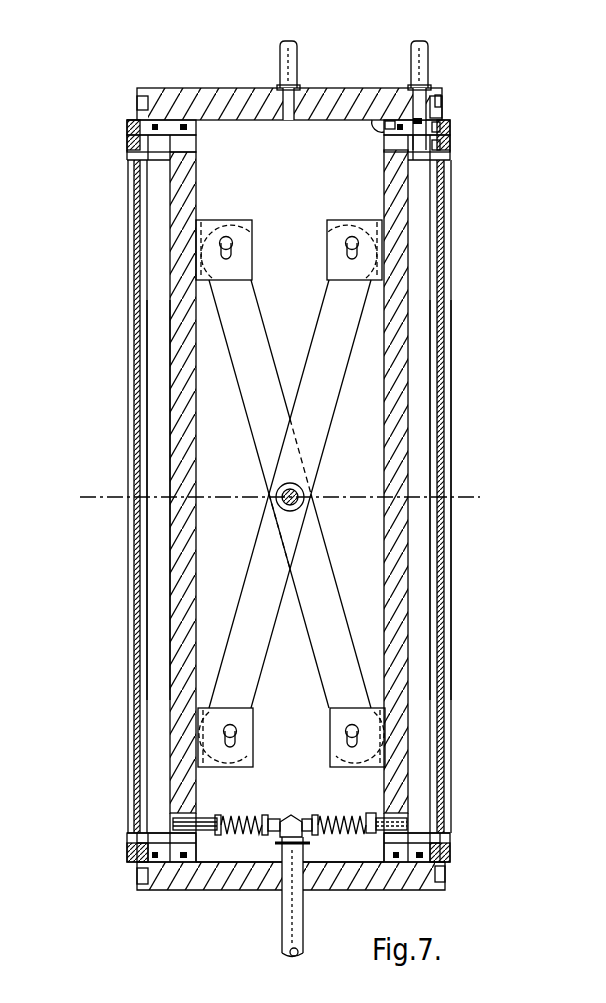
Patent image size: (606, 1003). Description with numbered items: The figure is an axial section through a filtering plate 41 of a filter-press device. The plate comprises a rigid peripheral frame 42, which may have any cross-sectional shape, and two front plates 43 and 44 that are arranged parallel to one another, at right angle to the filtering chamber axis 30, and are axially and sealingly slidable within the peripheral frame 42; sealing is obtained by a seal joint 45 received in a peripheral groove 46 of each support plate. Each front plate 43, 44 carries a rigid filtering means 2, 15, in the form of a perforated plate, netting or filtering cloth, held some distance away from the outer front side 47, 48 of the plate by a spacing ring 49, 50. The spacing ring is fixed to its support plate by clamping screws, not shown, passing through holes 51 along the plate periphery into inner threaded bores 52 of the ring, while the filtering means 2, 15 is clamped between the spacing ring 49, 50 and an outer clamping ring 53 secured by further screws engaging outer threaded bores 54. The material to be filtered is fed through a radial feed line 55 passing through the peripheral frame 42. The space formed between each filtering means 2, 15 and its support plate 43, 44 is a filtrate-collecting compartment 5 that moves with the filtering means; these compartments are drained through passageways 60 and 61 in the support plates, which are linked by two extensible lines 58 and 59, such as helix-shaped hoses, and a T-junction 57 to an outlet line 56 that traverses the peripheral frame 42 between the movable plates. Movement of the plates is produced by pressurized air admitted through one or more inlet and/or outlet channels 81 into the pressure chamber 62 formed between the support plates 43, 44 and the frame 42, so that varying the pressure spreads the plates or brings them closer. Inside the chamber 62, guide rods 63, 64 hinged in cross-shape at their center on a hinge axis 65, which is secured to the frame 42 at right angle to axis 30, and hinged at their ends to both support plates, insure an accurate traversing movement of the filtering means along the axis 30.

The filtering means 2 is at (455, 189).
The filtrate-collecting compartment 5 is at (167, 300).
The filtering means 15 is at (135, 258).
The filtering chamber axis 30 is at (100, 490).
The filtering plate 41 is at (344, 70).
The peripheral frame 42 is at (215, 92).
The front plate 43 is at (385, 196).
The front plate 44 is at (198, 172).
The seal joint 45 is at (393, 110).
The peripheral groove 46 is at (388, 138).
The outer front side 47 is at (447, 556).
The outer front side 48 is at (175, 556).
The spacing ring 49 is at (442, 120).
The spacing ring 50 is at (150, 126).
The holes 51 is at (385, 140).
The inner threaded bores 52 is at (410, 150).
The outer clamping ring 53 is at (452, 128).
The outer threaded bores 54 is at (452, 151).
The radial feed line 55 is at (428, 62).
The outlet line 56 is at (282, 924).
The T-junction 57 is at (290, 815).
The extensible line 58 is at (325, 815).
The extensible line 59 is at (240, 815).
The passageway 60 is at (384, 818).
The passageway 61 is at (226, 790).
The pressure chamber 62 is at (307, 219).
The rod 63 is at (326, 372).
The rod 64 is at (255, 372).
The hinge axis 65 is at (293, 482).
The pressurized air inlet and/or outlet channel 81 is at (300, 58).